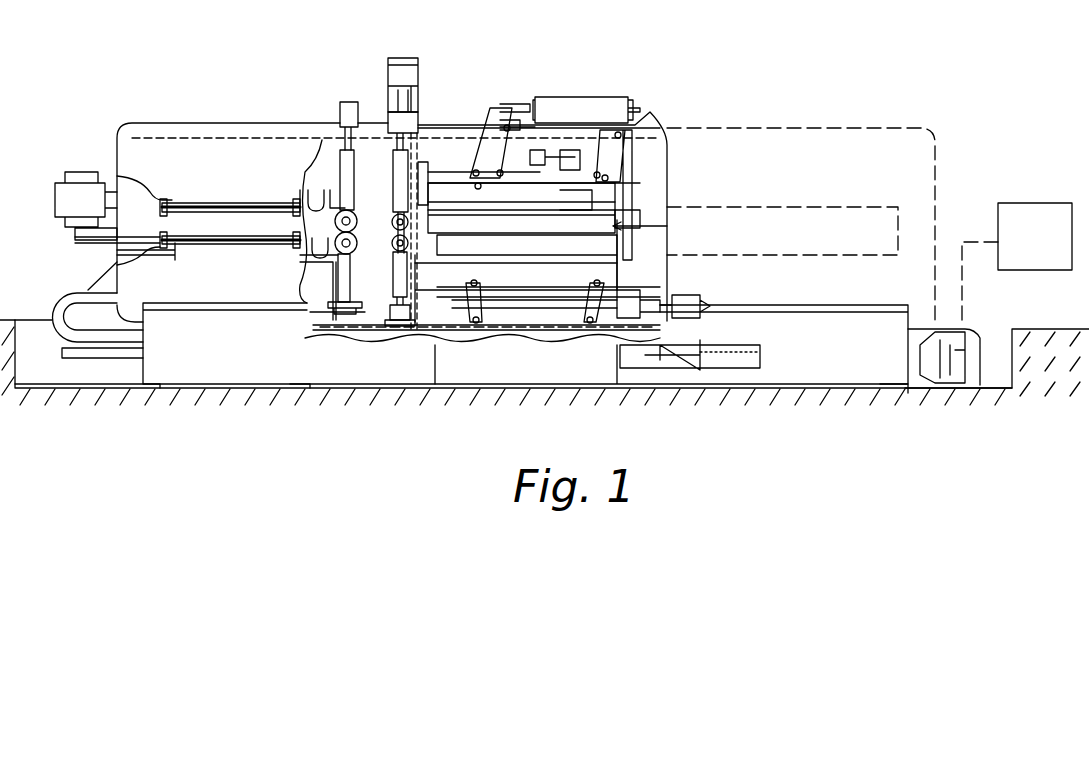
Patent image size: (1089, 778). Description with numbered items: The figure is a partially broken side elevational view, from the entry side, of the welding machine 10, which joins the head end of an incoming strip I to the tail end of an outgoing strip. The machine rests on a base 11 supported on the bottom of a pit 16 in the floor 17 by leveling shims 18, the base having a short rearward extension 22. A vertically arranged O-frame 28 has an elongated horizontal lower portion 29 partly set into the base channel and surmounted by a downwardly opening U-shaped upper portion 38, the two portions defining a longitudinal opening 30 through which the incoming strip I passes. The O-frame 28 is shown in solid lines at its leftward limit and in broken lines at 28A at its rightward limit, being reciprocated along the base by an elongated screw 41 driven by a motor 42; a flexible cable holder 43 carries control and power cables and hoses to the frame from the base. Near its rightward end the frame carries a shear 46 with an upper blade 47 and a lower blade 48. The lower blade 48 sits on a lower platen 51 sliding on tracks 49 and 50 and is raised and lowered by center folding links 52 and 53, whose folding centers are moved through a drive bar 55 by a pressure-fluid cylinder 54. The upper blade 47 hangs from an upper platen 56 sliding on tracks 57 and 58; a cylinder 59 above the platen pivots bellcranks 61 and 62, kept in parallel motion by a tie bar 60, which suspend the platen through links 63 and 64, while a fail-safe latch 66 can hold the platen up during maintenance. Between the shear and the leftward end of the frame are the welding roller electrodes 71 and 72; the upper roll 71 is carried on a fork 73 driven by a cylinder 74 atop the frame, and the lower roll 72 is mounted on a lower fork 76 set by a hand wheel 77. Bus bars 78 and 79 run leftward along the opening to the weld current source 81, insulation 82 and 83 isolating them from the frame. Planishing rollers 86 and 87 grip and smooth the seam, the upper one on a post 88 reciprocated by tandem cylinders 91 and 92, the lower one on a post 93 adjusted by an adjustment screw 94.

The welding machine 10 is at (108, 54).
The base 11 is at (318, 375).
The pit 16 is at (1008, 345).
The floor 17 is at (1028, 329).
The leveling shims 18 is at (903, 395).
The rearward extension 22 is at (525, 386).
The O-frame 28 is at (232, 122).
The rightward-limiting position of the O-frame 28A is at (945, 115).
The lower portion 29 is at (233, 286).
The opening 30 is at (210, 246).
The upper portion 38 is at (210, 164).
The screw 41 is at (700, 352).
The motor 42 is at (1050, 213).
The supply pipe loop 43 is at (63, 300).
The shear 46 is at (667, 226).
The upper blade 47 is at (527, 188).
The lower blade 48 is at (495, 295).
The track 49 is at (516, 287).
The track 50 is at (627, 290).
The lower platen 51 is at (552, 270).
The center folding link 52 is at (472, 284).
The center folding link 53 is at (590, 290).
The pressure-fluid cylinder 54 is at (688, 300).
The drive bar 55 is at (560, 322).
The upper platen 56 is at (487, 208).
The track 57 is at (430, 160).
The track 58 is at (620, 185).
The pressure-fluid cylinder 59 is at (598, 105).
The tie bar 60 is at (556, 125).
The bellcrank 61 is at (494, 124).
The bellcrank 62 is at (622, 132).
The link 63 is at (475, 180).
The link 64 is at (623, 225).
The fail-safe latch 66 is at (552, 178).
The upper welding roller electrode 71 is at (361, 218).
The lower welding roller electrode 72 is at (361, 240).
The fork 73 is at (322, 224).
The pressure fluid cylinder 74 is at (355, 105).
The lower fork 76 is at (350, 258).
The hand wheel 77 is at (368, 312).
The bus bar 78 is at (210, 188).
The bus bar 79 is at (222, 240).
The weld current source 81 is at (62, 183).
The insulation 82 is at (352, 200).
The insulation 83 is at (350, 275).
The upper planishing roller 86 is at (413, 225).
The lower planishing roller 87 is at (414, 246).
The post 88 is at (398, 188).
The pressure-fluid cylinder 91 is at (425, 80).
The pressure-fluid cylinder 92 is at (415, 122).
The post 93 is at (400, 310).
The adjustment screw 94 is at (408, 330).
The incoming strip I is at (478, 233).